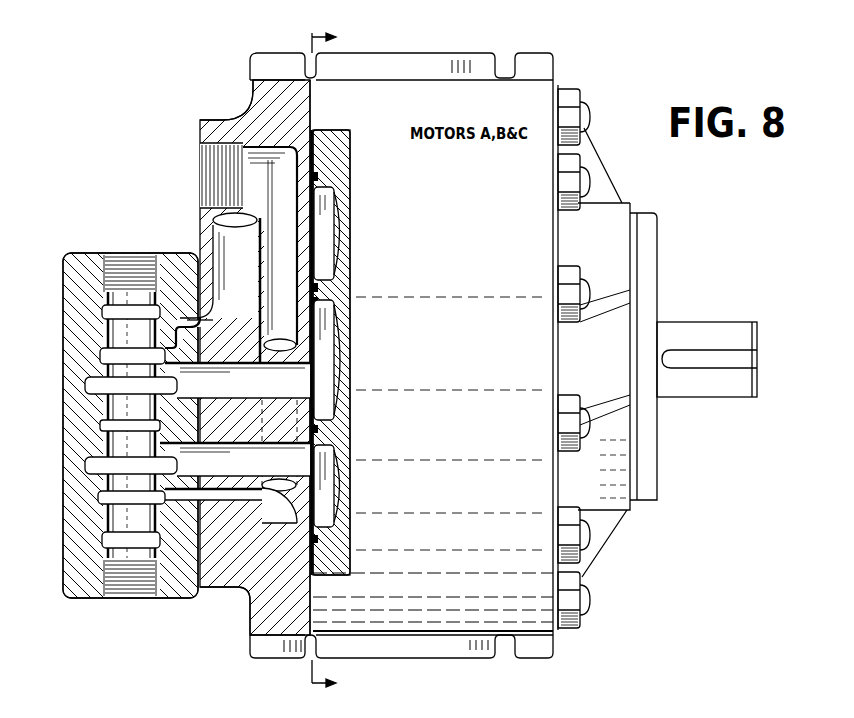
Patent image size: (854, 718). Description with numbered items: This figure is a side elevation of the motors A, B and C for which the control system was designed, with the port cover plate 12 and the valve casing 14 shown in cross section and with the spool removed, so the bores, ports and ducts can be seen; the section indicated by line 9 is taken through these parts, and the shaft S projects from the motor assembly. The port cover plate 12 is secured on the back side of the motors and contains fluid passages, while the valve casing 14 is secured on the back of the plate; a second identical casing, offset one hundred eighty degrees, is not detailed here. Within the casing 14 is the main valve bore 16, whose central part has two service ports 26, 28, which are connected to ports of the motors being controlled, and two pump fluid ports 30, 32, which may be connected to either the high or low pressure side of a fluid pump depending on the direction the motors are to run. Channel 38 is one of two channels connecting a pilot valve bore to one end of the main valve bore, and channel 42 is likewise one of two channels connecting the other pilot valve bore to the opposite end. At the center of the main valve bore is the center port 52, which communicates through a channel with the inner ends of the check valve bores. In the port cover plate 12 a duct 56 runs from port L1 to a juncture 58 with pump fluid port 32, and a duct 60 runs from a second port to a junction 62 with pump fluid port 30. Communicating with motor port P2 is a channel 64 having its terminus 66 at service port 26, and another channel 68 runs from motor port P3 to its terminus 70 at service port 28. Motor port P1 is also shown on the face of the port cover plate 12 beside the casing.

The port cover plate 12 is at (260, 92).
The valve casing 14 is at (70, 557).
The main valve bore 16 is at (104, 446).
The service port 26 is at (86, 385).
The service port 28 is at (86, 466).
The pump fluid port 30 is at (100, 356).
The pump fluid port 32 is at (99, 496).
The channel 38 is at (100, 312).
The channel 42 is at (101, 536).
The center port 52 is at (100, 426).
The duct 56 is at (291, 306).
The juncture 58 is at (194, 507).
The duct 60 is at (245, 284).
The junction 62 is at (195, 338).
The channel 64 is at (254, 395).
The terminus 66 is at (190, 385).
The channel 68 is at (254, 473).
The terminus 70 is at (190, 463).
The section line 9 is at (331, 362).
The port L1 is at (203, 170).
The motor port P1 is at (325, 242).
The motor port P2 is at (328, 358).
The motor port P3 is at (325, 493).
The shaft S is at (716, 332).